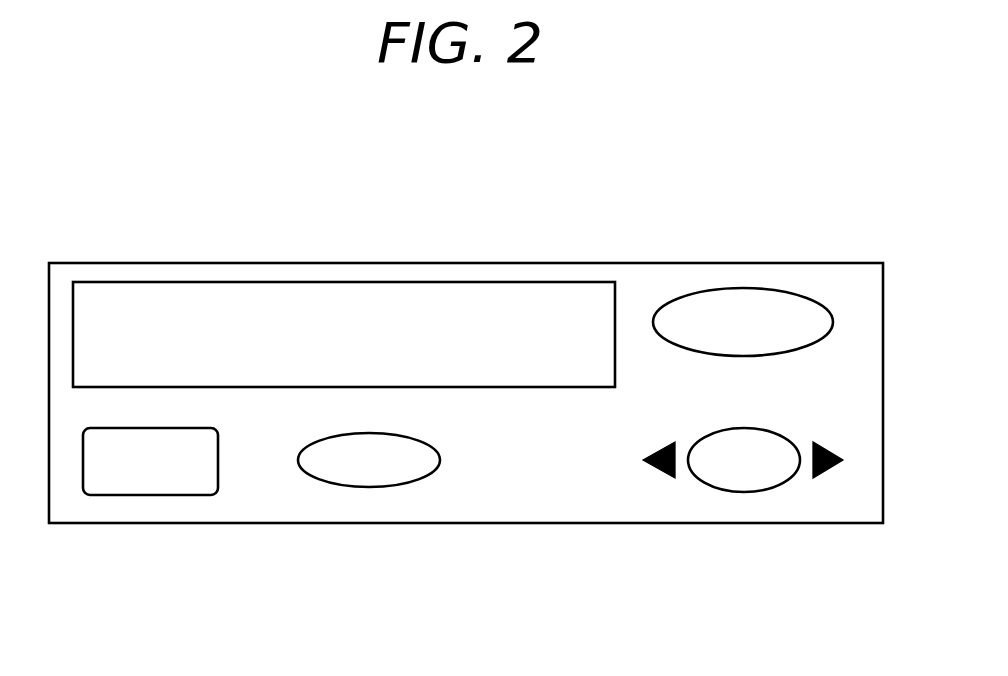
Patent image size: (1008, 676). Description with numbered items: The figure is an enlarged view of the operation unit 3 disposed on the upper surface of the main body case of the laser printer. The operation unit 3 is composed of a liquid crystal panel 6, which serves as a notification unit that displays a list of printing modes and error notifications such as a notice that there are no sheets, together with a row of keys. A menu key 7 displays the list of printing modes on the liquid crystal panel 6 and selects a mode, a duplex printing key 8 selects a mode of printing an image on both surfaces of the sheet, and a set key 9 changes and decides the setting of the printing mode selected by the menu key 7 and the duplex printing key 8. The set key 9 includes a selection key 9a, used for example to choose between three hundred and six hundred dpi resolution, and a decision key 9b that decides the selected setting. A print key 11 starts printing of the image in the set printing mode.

The operation unit 3 is at (452, 152).
The liquid crystal panel 6 is at (195, 282).
The menu key 7 is at (743, 288).
The duplex printing key 8 is at (368, 487).
The set key 9 is at (769, 516).
The selection key 9a is at (821, 478).
The decision key 9b is at (785, 437).
The print key 11 is at (153, 495).